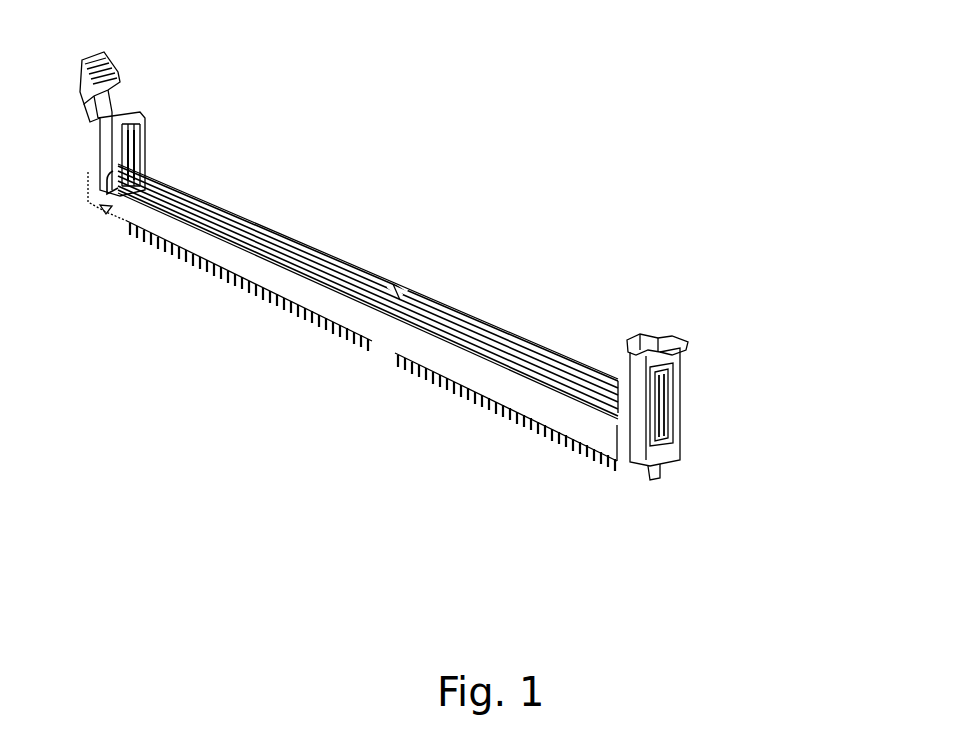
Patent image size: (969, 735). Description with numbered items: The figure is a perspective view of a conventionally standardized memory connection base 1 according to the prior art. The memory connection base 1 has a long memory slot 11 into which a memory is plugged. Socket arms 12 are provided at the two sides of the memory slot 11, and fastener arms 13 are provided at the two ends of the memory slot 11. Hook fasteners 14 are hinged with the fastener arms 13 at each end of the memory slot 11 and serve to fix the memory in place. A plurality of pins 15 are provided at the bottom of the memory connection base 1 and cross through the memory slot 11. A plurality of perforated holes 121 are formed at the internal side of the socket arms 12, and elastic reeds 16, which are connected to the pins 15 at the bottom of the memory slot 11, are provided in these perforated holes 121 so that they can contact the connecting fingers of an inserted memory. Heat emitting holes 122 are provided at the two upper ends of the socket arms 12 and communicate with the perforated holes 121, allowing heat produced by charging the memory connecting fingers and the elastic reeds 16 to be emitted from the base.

The memory connection base 1 is at (637, 476).
The memory slot 11 is at (318, 250).
The socket arms 12 is at (405, 290).
The perforated holes 121 is at (212, 195).
The heat emitting holes 122 is at (497, 330).
The fastener arms 13 is at (630, 403).
The hook fasteners 14 is at (125, 82).
The pins 15 is at (343, 340).
The elastic reeds 16 is at (555, 392).